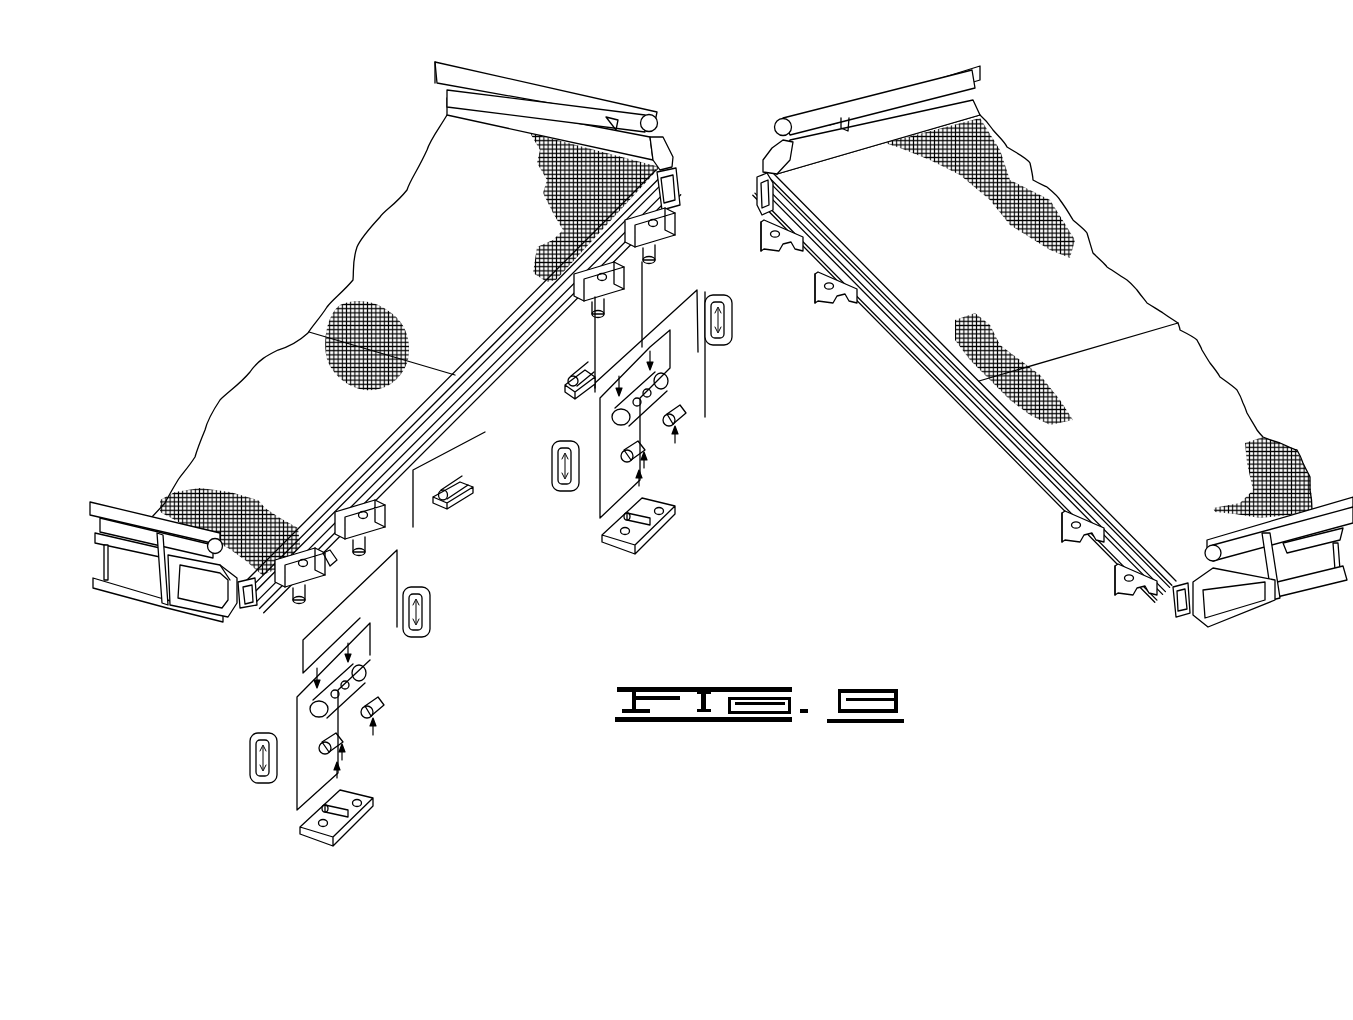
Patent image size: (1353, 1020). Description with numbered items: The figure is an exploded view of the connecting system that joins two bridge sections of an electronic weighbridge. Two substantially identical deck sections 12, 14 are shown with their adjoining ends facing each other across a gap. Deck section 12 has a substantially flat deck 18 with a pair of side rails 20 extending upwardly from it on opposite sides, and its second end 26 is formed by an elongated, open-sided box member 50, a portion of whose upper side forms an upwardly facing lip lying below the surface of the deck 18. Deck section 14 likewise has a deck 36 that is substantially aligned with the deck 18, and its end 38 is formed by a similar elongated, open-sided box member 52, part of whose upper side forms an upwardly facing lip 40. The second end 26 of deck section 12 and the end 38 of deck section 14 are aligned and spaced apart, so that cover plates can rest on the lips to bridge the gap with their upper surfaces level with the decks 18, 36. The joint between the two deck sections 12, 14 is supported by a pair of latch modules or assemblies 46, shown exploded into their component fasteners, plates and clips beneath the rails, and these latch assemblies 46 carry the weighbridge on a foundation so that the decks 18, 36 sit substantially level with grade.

The deck section 12 is at (366, 354).
The deck section 14 is at (1053, 360).
The deck 18 is at (483, 226).
The side rails 20 is at (590, 107).
The second end 26 is at (480, 354).
The deck 36 is at (1004, 290).
The end 38 is at (1165, 600).
The upwardly facing lip 40 is at (1065, 467).
The latch modules or assemblies 46 is at (428, 703).
The open-sided box member 50 is at (262, 605).
The open-sided box member 52 is at (1199, 624).